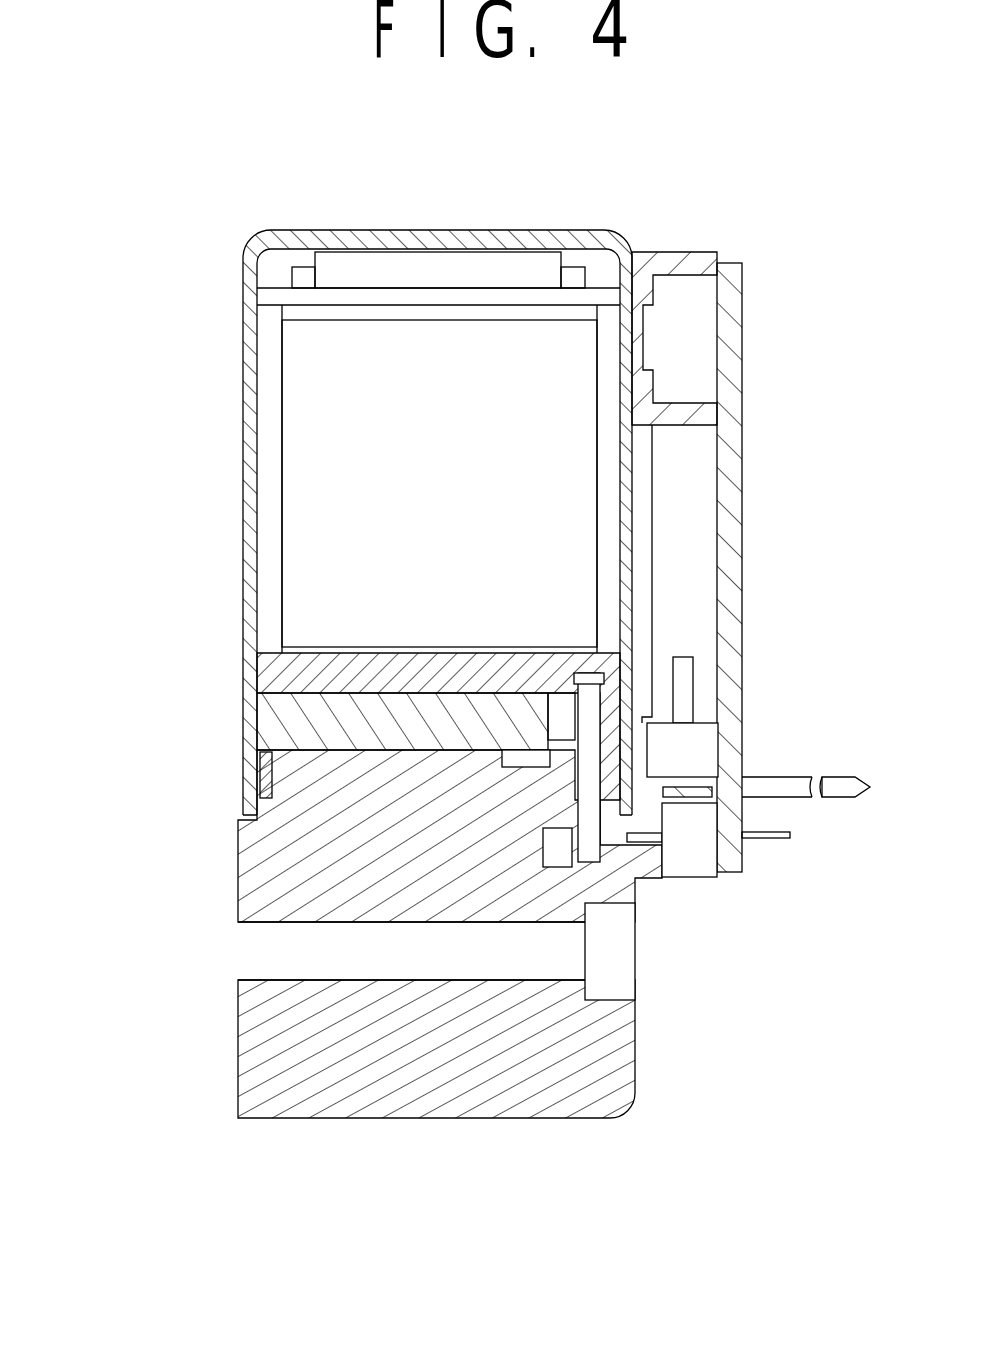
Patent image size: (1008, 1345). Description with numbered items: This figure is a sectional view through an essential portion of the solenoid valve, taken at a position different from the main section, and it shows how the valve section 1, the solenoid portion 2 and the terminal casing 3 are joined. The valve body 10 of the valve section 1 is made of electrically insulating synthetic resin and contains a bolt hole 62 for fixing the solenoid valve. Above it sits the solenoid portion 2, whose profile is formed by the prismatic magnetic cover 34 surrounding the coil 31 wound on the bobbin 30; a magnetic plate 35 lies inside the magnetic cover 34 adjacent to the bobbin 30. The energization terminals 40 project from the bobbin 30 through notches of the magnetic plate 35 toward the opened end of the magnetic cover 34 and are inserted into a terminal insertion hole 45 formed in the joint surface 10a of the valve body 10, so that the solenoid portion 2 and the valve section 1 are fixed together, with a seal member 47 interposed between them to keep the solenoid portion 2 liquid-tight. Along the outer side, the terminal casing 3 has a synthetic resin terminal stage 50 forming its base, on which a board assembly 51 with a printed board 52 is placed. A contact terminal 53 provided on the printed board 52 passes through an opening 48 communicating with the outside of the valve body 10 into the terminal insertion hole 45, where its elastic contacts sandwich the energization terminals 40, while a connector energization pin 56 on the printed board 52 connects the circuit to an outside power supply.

The valve section 1 is at (474, 652).
The solenoid portion 2 is at (347, 449).
The terminal casing 3 is at (759, 509).
The valve body 10 is at (437, 1102).
The joint surface 10a is at (290, 728).
The bobbin 30 is at (262, 668).
The coil 31 is at (300, 437).
The magnetic cover 34 is at (415, 247).
The magnetic plate 35 is at (285, 710).
The energization terminals 40 is at (585, 822).
The terminal insertion hole 45 is at (575, 797).
The seal member 47 is at (262, 770).
The opening 48 is at (630, 858).
The terminal stage 50 is at (670, 250).
The board assembly 51 is at (773, 322).
The printed board 52 is at (735, 392).
The contact terminal 53 is at (650, 880).
The connector energization pin 56 is at (777, 782).
The bolt hole 62 is at (288, 980).